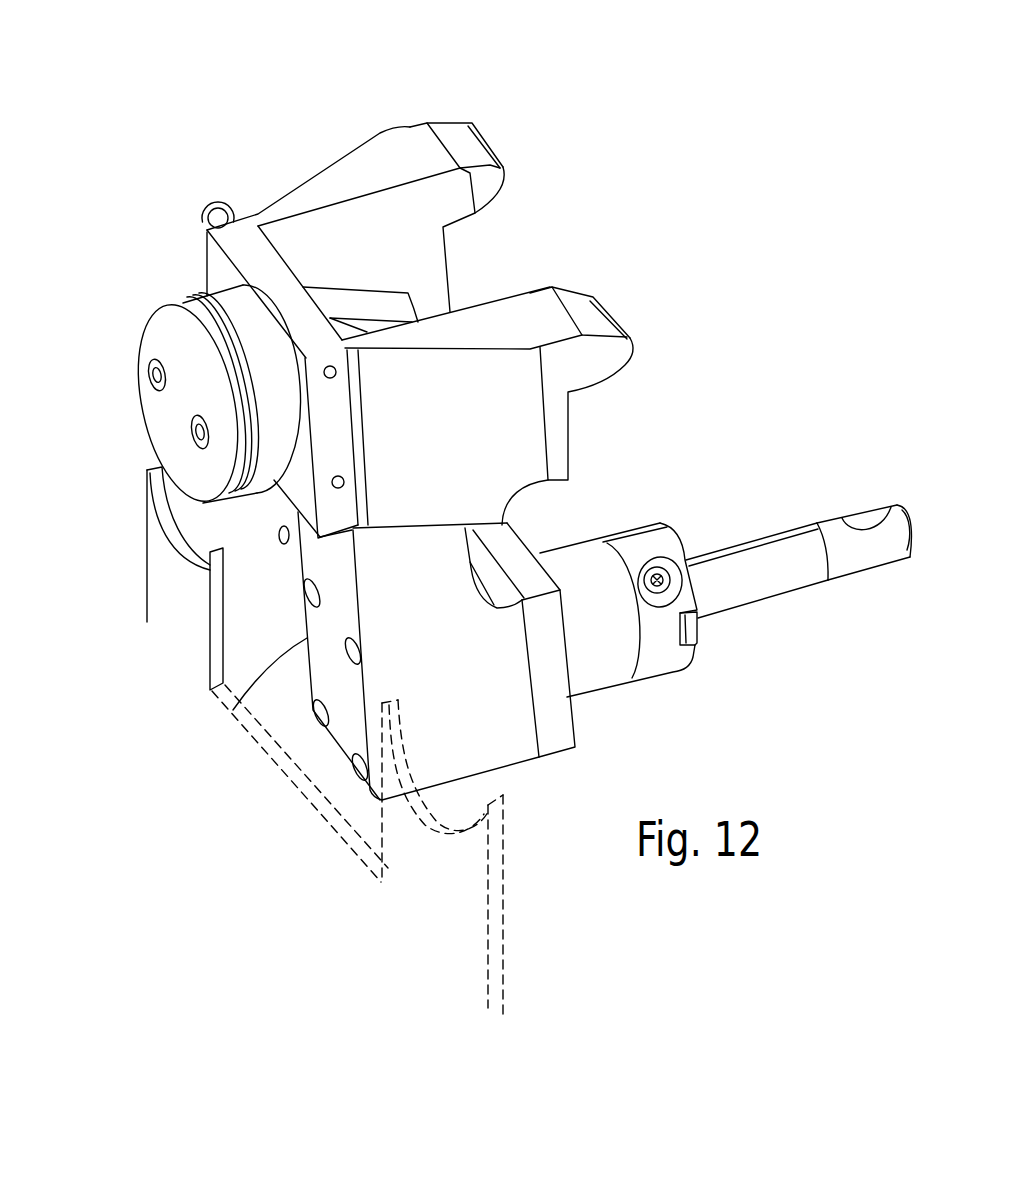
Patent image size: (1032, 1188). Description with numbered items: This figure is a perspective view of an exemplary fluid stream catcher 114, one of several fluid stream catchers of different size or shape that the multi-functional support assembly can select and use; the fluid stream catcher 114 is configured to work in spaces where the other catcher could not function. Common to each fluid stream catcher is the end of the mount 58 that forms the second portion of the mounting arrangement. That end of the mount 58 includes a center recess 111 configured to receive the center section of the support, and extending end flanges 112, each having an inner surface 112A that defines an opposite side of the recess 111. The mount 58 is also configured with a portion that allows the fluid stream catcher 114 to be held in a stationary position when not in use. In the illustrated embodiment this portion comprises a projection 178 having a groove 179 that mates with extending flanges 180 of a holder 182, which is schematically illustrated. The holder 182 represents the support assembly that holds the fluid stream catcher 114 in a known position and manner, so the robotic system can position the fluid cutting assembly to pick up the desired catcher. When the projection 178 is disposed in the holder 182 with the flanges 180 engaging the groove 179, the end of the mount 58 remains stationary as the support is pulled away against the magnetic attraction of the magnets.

The mount 58 is at (233, 710).
The center recess 111 is at (562, 199).
The extending end flanges 112 is at (410, 126).
The inner surface 112A is at (356, 237).
The fluid stream catcher 114 is at (757, 360).
The projection 178 is at (223, 312).
The groove 179 is at (178, 302).
The extending flanges 180 is at (148, 490).
The holder 182 is at (152, 592).